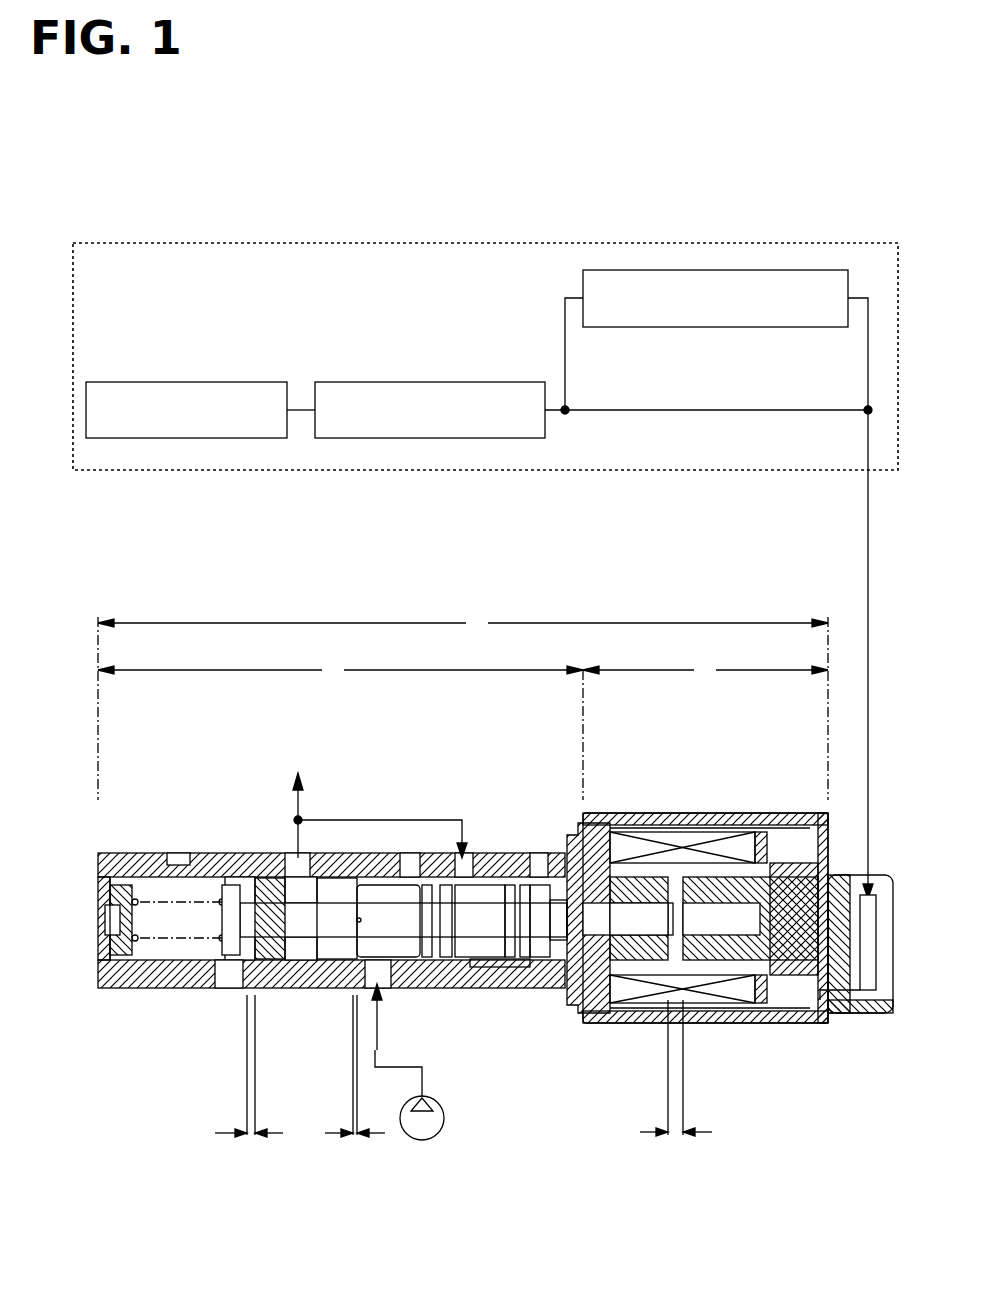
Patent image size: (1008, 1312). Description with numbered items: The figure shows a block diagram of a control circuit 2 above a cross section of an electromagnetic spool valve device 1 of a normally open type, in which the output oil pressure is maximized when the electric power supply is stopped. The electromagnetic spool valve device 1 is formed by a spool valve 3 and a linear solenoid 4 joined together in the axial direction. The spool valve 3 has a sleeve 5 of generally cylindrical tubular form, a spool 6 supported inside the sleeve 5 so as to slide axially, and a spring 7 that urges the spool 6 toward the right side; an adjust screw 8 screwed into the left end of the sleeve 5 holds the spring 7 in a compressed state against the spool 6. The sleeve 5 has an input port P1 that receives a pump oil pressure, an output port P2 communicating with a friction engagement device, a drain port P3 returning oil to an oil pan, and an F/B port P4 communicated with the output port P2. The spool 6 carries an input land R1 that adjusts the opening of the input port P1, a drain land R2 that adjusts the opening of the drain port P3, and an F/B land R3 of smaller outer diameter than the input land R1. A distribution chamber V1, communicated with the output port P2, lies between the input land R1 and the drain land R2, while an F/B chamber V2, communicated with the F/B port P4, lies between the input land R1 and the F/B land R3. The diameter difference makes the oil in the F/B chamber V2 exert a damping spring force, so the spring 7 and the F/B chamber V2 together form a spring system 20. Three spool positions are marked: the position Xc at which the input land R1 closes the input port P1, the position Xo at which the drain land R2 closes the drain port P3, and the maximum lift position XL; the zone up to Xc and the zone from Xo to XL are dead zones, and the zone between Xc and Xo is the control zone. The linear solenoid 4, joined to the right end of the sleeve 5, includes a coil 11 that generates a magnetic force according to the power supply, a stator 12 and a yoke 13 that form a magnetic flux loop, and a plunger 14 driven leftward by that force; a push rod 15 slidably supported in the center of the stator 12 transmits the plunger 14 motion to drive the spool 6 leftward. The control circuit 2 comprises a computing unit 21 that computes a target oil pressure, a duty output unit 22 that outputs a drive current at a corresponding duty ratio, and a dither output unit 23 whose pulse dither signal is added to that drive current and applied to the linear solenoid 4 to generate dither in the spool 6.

The electromagnetic spool valve device 1 is at (463, 703).
The control circuit 2 is at (418, 243).
The spool valve 3 is at (340, 727).
The linear solenoid 4 is at (705, 670).
The sleeve 5 is at (130, 858).
The spool 6 is at (272, 905).
The spring 7 is at (175, 940).
The adjust screw 8 is at (118, 965).
The coil 11 is at (680, 848).
The stator 12 is at (625, 862).
The yoke 13 is at (745, 825).
The plunger 14 is at (730, 937).
The push rod 15 is at (628, 920).
The spring system 20 is at (342, 969).
The computing unit 21 is at (178, 382).
The duty output unit 22 is at (402, 382).
The dither output unit 23 is at (720, 327).
The input port P1 is at (385, 977).
The output port P2 is at (290, 858).
The drain port P3 is at (232, 990).
The F/B port P4 is at (472, 855).
The input land R1 is at (408, 860).
The drain land R2 is at (235, 875).
The F/B land R3 is at (525, 858).
The distribution chamber V1 is at (300, 955).
The F/B chamber V2 is at (470, 983).
The position Xo is at (249, 1086).
The position Xc is at (355, 1086).
The maximum lift position XL is at (676, 1089).